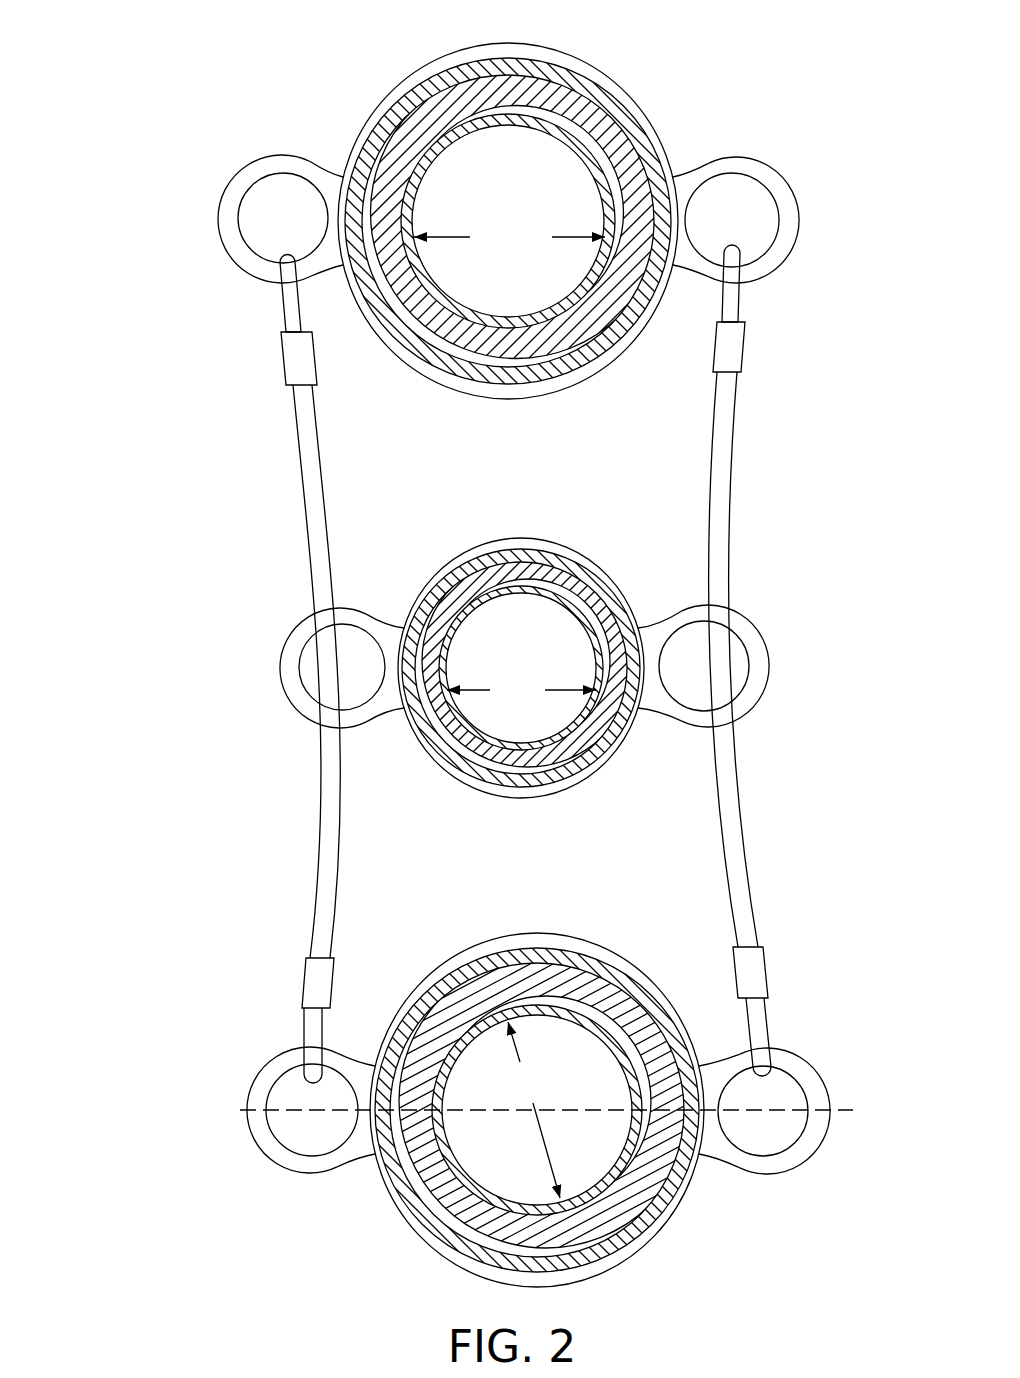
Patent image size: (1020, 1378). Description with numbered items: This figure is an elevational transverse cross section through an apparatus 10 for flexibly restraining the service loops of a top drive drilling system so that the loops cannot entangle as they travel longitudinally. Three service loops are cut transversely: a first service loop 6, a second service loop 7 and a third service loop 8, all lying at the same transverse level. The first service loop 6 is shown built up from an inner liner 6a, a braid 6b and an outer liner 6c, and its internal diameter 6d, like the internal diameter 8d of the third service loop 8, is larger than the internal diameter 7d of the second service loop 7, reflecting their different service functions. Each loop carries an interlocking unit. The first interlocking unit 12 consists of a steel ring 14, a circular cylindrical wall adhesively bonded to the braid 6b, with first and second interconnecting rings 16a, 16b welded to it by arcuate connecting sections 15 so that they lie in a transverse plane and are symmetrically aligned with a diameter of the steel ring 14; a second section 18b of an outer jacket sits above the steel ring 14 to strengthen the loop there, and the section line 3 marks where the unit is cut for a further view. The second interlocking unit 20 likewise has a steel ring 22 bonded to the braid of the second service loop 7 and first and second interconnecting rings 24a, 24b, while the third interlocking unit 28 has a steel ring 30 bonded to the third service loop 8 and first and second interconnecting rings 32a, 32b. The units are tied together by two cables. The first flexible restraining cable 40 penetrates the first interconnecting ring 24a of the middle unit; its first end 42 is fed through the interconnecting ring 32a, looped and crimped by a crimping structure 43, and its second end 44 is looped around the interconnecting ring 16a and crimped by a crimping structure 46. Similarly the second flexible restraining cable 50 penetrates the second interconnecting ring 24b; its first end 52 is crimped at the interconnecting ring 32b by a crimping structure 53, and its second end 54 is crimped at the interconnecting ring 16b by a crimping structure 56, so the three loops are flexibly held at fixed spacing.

The section line 3- 3 is at (225, 1110).
The first service loop 6 is at (569, 1035).
The inner liner 6a is at (525, 1004).
The braid 6b is at (441, 1008).
The outer liner 6c is at (608, 950).
The internal diameter of first service loop 6d is at (540, 1098).
The second service loop 7 is at (538, 607).
The internal diameter of second service loop 7d is at (536, 704).
The third service loop 8 is at (546, 134).
The internal diameter of third service loop 8d is at (494, 251).
The apparatus 10 is at (98, 142).
The first interlocking unit 12 is at (748, 1204).
The steel ring 14 is at (552, 933).
The arcuate connecting sections 15 is at (340, 176).
The first interconnecting ring 16a is at (815, 1092).
The second interconnecting ring 16b is at (253, 1102).
The second section of outer jacket 18b is at (655, 984).
The second interlocking unit 20 is at (646, 545).
The steel ring 22 is at (527, 551).
The first interconnecting ring 24a is at (769, 661).
The second interconnecting ring 24b is at (281, 663).
The third interlocking unit 28 is at (738, 92).
The steel ring 30 is at (498, 66).
The first interconnecting ring 32a is at (771, 262).
The second interconnecting ring 32b is at (217, 233).
The first flexible restraining cable 40 is at (729, 471).
The first end of first cable 42 is at (742, 302).
The crimping structure 43 is at (742, 352).
The second end of first cable 44 is at (770, 1018).
The crimping structure 46 is at (768, 968).
The second flexible restraining cable 50 is at (310, 491).
The first end of second cable 52 is at (286, 308).
The crimping structure 53 is at (297, 363).
The second end of second cable 54 is at (315, 1030).
The crimping structure 56 is at (314, 985).